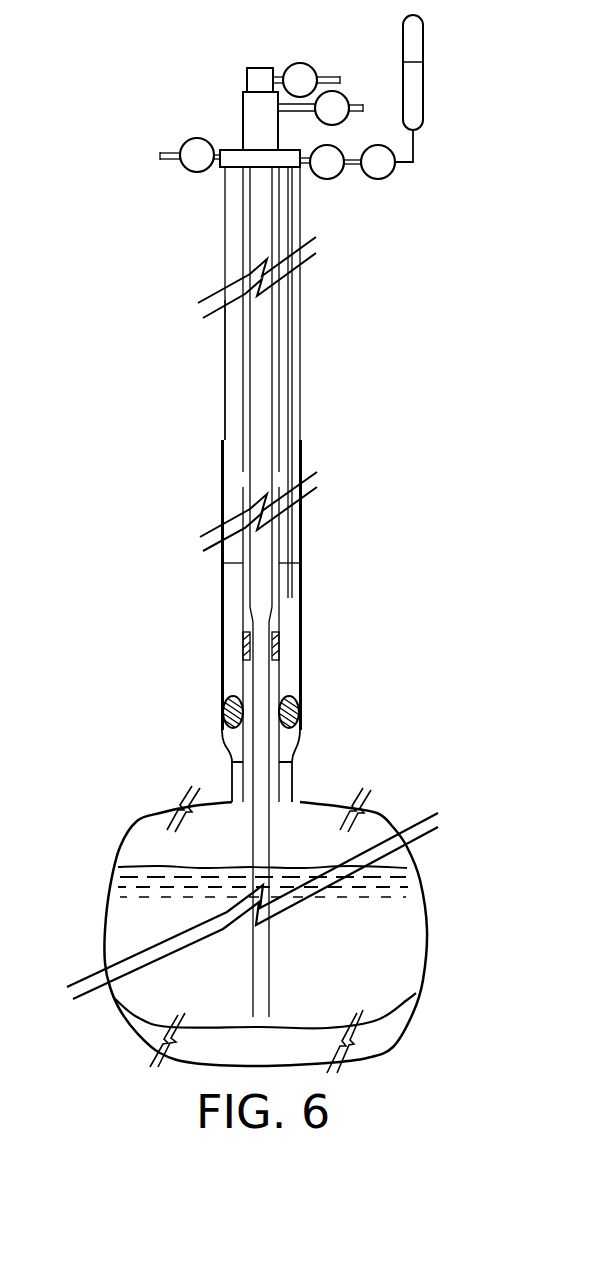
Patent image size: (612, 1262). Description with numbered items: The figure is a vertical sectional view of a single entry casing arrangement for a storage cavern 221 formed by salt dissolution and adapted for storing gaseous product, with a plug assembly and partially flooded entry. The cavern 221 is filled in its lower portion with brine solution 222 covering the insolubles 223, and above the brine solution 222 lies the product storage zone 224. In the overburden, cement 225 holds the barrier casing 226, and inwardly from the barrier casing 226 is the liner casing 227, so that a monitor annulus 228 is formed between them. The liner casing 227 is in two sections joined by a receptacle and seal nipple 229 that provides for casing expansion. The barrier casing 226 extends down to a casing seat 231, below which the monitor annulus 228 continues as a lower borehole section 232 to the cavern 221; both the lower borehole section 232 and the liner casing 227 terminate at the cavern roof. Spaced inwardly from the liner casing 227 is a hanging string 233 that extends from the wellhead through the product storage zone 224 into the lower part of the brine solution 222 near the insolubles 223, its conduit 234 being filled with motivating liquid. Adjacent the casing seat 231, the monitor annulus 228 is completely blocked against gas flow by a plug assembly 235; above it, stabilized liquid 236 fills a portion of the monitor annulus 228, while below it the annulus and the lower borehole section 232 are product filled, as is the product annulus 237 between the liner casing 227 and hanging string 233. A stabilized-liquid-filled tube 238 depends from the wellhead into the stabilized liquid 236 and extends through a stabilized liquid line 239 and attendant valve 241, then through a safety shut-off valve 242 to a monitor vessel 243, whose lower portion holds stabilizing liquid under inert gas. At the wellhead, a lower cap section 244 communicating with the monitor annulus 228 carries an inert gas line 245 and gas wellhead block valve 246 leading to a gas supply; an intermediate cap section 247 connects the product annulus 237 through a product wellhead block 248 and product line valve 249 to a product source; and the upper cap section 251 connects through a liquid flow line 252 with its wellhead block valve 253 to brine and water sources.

The storage cavern 221 is at (107, 914).
The brine solution 222 is at (402, 933).
The insolubles 223 is at (407, 1020).
The product storage zone 224 is at (148, 838).
The cement 225 is at (223, 620).
The barrier casing 226 is at (231, 393).
The liner casing 227 is at (224, 758).
The monitor annulus 228 is at (232, 331).
The receptacle and seal nipple 229 is at (280, 648).
The casing seat 231 is at (300, 746).
The lower borehole section 232 is at (300, 779).
The hanging string 233 is at (275, 358).
The conduit 234 is at (261, 233).
The plug assembly 235 is at (300, 702).
The stabilized liquid 236 is at (233, 581).
The product annulus 237 is at (277, 543).
The stabilized-liquid-filled tube 238 is at (290, 410).
The stabilized liquid line 239 is at (307, 164).
The valve 241 is at (333, 146).
The safety shut-off valve 242 is at (393, 173).
The monitor vessel 243 is at (423, 90).
The lower cap section 244 is at (224, 166).
The inert gas line 245 is at (219, 150).
The gas wellhead block valve 246 is at (180, 150).
The intermediate cap section 247 is at (254, 108).
The product wellhead block 248 is at (283, 112).
The product line valve 249 is at (344, 100).
The upper cap section 251 is at (257, 78).
The liquid flow line 252 is at (283, 76).
The wellhead block valve 253 is at (305, 62).